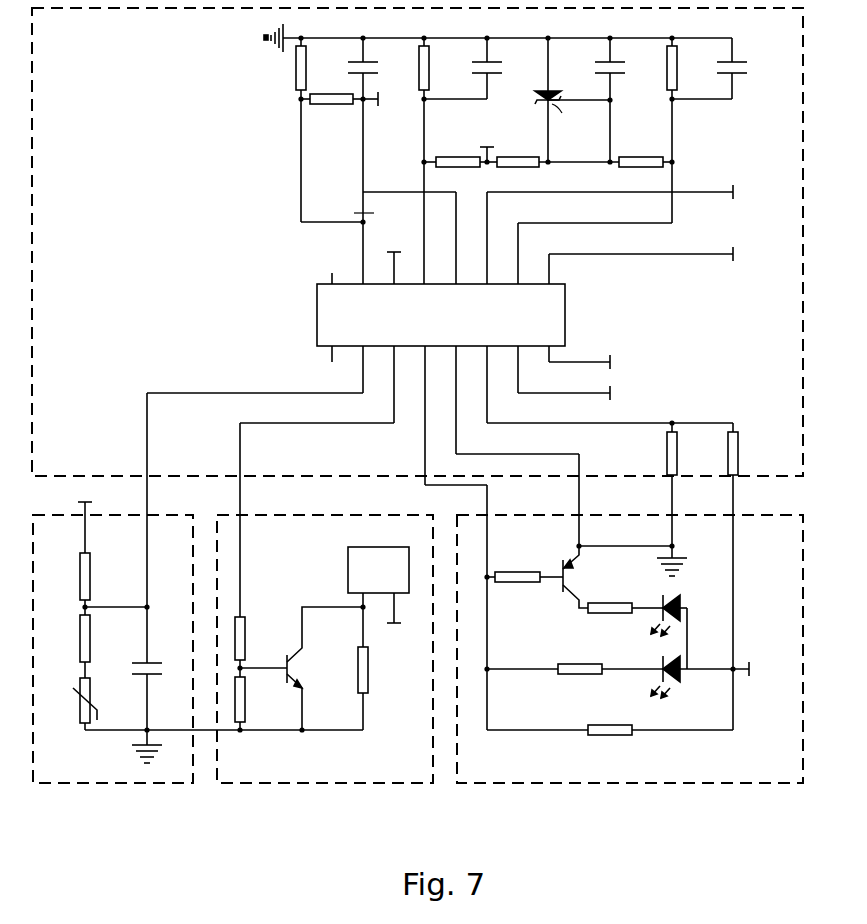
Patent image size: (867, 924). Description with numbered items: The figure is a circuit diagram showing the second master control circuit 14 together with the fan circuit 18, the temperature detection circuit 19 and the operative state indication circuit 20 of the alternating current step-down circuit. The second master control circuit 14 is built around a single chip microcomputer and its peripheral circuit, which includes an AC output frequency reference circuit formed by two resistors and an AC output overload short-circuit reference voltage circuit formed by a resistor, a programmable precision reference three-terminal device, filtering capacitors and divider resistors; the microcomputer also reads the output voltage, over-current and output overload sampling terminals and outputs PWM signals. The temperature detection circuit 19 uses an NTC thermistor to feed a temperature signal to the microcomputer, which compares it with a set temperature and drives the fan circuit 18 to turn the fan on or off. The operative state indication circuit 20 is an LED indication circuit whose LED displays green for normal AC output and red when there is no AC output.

The second master control circuit 14 is at (417, 368).
The fan circuit 18 is at (325, 651).
The temperature detection circuit 19 is at (125, 636).
The operative state indication circuit 20 is at (630, 651).